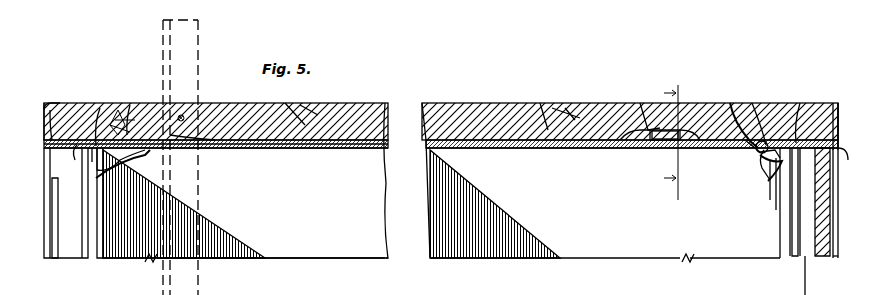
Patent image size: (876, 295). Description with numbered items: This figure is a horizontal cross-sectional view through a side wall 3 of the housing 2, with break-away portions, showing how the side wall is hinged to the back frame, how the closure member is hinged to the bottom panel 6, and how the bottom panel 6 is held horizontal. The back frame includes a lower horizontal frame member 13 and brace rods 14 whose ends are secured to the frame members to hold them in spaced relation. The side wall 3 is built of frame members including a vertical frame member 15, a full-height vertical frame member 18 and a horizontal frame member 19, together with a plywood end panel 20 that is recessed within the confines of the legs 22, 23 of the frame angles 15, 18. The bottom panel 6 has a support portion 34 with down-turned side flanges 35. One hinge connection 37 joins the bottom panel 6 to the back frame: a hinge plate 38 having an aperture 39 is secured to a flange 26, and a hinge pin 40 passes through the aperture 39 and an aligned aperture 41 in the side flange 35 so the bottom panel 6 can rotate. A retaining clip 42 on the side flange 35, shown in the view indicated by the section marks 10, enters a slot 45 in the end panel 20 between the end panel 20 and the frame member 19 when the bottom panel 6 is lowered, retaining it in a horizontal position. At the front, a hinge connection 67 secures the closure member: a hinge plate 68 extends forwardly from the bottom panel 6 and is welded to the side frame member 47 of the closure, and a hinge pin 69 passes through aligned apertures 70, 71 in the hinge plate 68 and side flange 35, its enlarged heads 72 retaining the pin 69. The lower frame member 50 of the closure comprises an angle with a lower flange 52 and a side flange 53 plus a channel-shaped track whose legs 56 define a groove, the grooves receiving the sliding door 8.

The housing 2 is at (522, 91).
The side wall 3 is at (475, 90).
The bottom panel 6 is at (346, 258).
The sliding door 8 is at (822, 258).
The FIG. 10 section indicator 10 is at (685, 142).
The lower horizontal frame member 13 is at (46, 183).
The brace rods 14 is at (58, 235).
The frame member 15 is at (842, 98).
The frame member 18 is at (44, 106).
The frame member 19 is at (652, 141).
The end panel 20 is at (536, 105).
The leg 22 is at (50, 148).
The leg 23 is at (46, 126).
The flange 26 is at (56, 152).
The support portion 34 is at (310, 258).
The side flange 35 is at (160, 152).
The hinge connection 37 is at (98, 170).
The hinge plate 38 is at (78, 151).
The aperture 39 is at (113, 125).
The hinge pin 40 is at (120, 118).
The aperture 41 is at (104, 150).
The retaining clip 42 is at (688, 142).
The slot 45 is at (654, 120).
The side frame member 47 is at (780, 208).
The lower frame member 50 is at (798, 258).
The lower flange 52 is at (795, 275).
The side flange 53 is at (628, 146).
The legs 56 is at (842, 258).
The hinge connection 67 is at (762, 170).
The hinge plate 68 is at (814, 114).
The hinge pin 69 is at (768, 114).
The aperture 70 is at (732, 115).
The aperture 71 is at (748, 152).
The enlarged head 72 is at (774, 178).